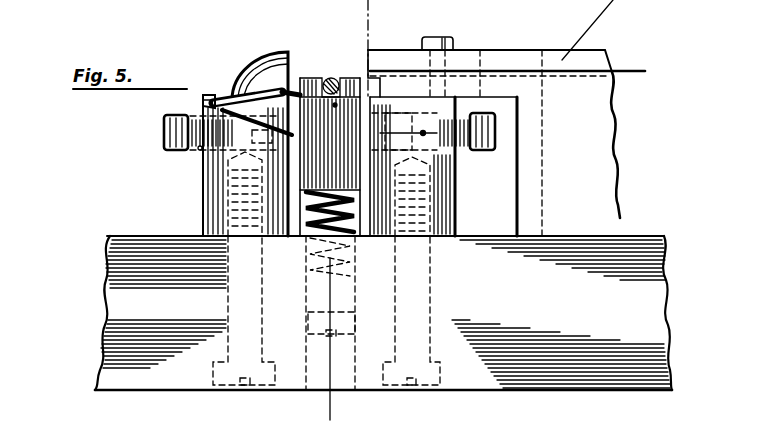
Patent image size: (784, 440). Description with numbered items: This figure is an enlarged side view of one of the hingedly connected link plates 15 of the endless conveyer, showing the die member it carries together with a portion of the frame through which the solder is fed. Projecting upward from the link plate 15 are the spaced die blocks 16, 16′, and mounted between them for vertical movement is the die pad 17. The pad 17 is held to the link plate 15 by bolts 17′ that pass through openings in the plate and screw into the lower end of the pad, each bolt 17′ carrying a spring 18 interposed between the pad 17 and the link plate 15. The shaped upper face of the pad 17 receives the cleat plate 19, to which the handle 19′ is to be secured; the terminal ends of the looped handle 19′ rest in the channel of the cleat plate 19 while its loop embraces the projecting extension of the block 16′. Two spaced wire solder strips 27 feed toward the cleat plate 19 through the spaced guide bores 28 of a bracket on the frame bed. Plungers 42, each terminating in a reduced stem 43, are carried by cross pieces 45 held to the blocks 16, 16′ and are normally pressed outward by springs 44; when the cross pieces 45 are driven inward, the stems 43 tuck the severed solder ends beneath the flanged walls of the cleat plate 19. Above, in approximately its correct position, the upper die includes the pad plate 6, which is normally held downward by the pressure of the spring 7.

The link plate 15 is at (612, 244).
The die block 16 is at (440, 161).
The die block 16′ is at (215, 170).
The die pad 17 is at (318, 78).
The bolts 17′ is at (327, 308).
The spring 18 is at (312, 208).
The cleat plate 19 is at (349, 78).
The handle 19′ is at (221, 100).
The wire solder strips 27 is at (625, 72).
The guide bores 28 is at (610, 72).
The plungers 42 is at (425, 133).
The reduced stem 43 is at (378, 118).
The springs 44 is at (196, 118).
The cross pieces 45 is at (165, 120).
The pad plate 6 is at (333, 3).
The spring 7 is at (349, 215).